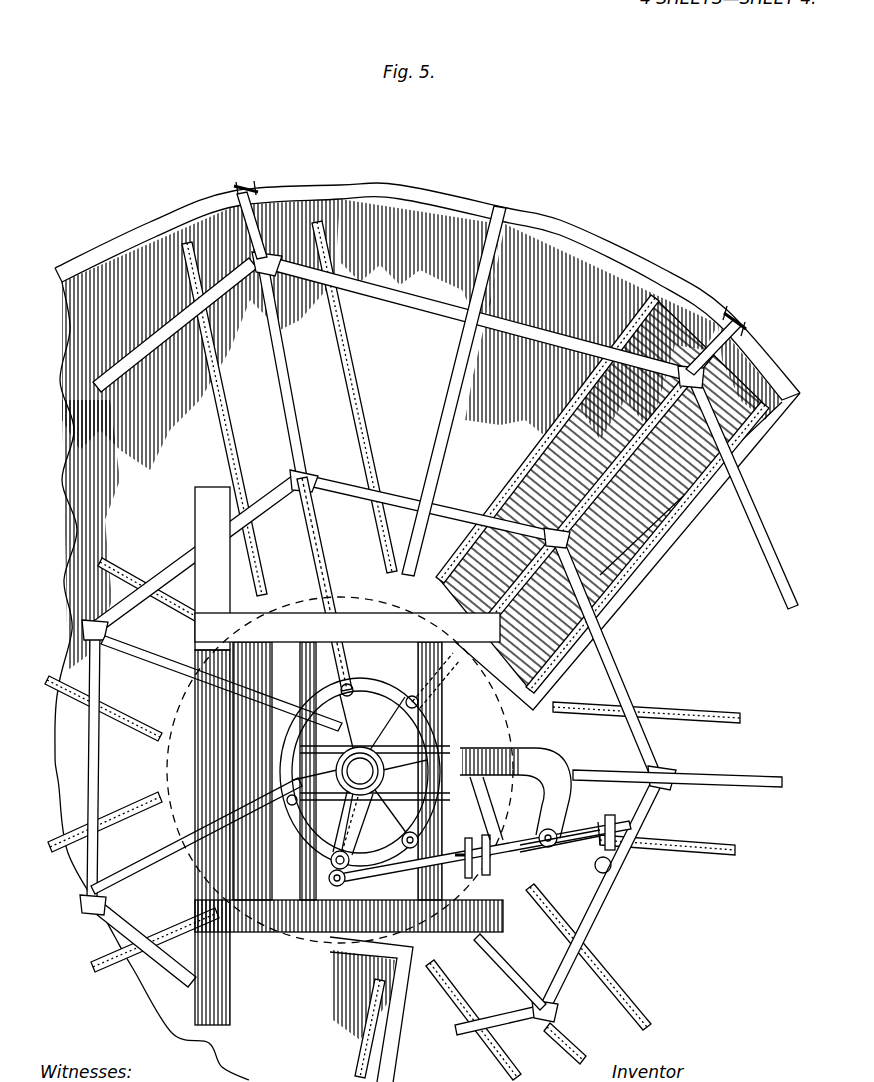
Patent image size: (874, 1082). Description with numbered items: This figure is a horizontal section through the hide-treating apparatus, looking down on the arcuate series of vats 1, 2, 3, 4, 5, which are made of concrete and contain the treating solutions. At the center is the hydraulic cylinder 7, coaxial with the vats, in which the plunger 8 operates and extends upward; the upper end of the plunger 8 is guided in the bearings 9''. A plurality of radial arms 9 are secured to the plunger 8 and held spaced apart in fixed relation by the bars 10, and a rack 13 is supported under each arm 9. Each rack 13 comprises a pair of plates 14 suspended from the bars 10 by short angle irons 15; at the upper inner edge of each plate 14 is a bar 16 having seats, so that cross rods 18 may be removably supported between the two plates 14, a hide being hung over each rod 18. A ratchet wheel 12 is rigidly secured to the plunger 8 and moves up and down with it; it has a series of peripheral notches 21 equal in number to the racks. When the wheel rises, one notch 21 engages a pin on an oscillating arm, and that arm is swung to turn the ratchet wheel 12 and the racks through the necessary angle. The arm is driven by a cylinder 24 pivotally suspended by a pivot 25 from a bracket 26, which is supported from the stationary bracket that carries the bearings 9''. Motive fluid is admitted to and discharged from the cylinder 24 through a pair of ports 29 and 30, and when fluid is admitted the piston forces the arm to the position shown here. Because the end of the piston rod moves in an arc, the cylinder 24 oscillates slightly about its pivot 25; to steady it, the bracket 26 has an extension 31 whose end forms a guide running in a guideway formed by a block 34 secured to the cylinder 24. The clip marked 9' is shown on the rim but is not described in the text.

The vat 1 is at (365, 1009).
The vat 2 is at (153, 930).
The vat 3 is at (197, 489).
The vat 4 is at (420, 263).
The vat 5 is at (620, 467).
The hydraulic cylinder 7 is at (584, 1052).
The plunger 8 is at (372, 767).
The radial arm 9 is at (436, 755).
The rim clip 9' is at (508, 265).
The bearing 9'' is at (360, 772).
The bar 10 is at (147, 348).
The ratchet wheel 12 is at (360, 772).
The rack 13 is at (168, 615).
The plate 14 is at (222, 416).
The angle iron 15 is at (340, 293).
The bar 16 is at (222, 381).
The cross rod 18 is at (553, 450).
The peripheral notch 21 is at (357, 680).
The cylinder 24 is at (583, 840).
The pivot 25 is at (549, 846).
The bracket 26 is at (510, 767).
The port 29 is at (610, 866).
The port 30 is at (505, 868).
The extension 31 is at (500, 813).
The block 34 is at (512, 833).